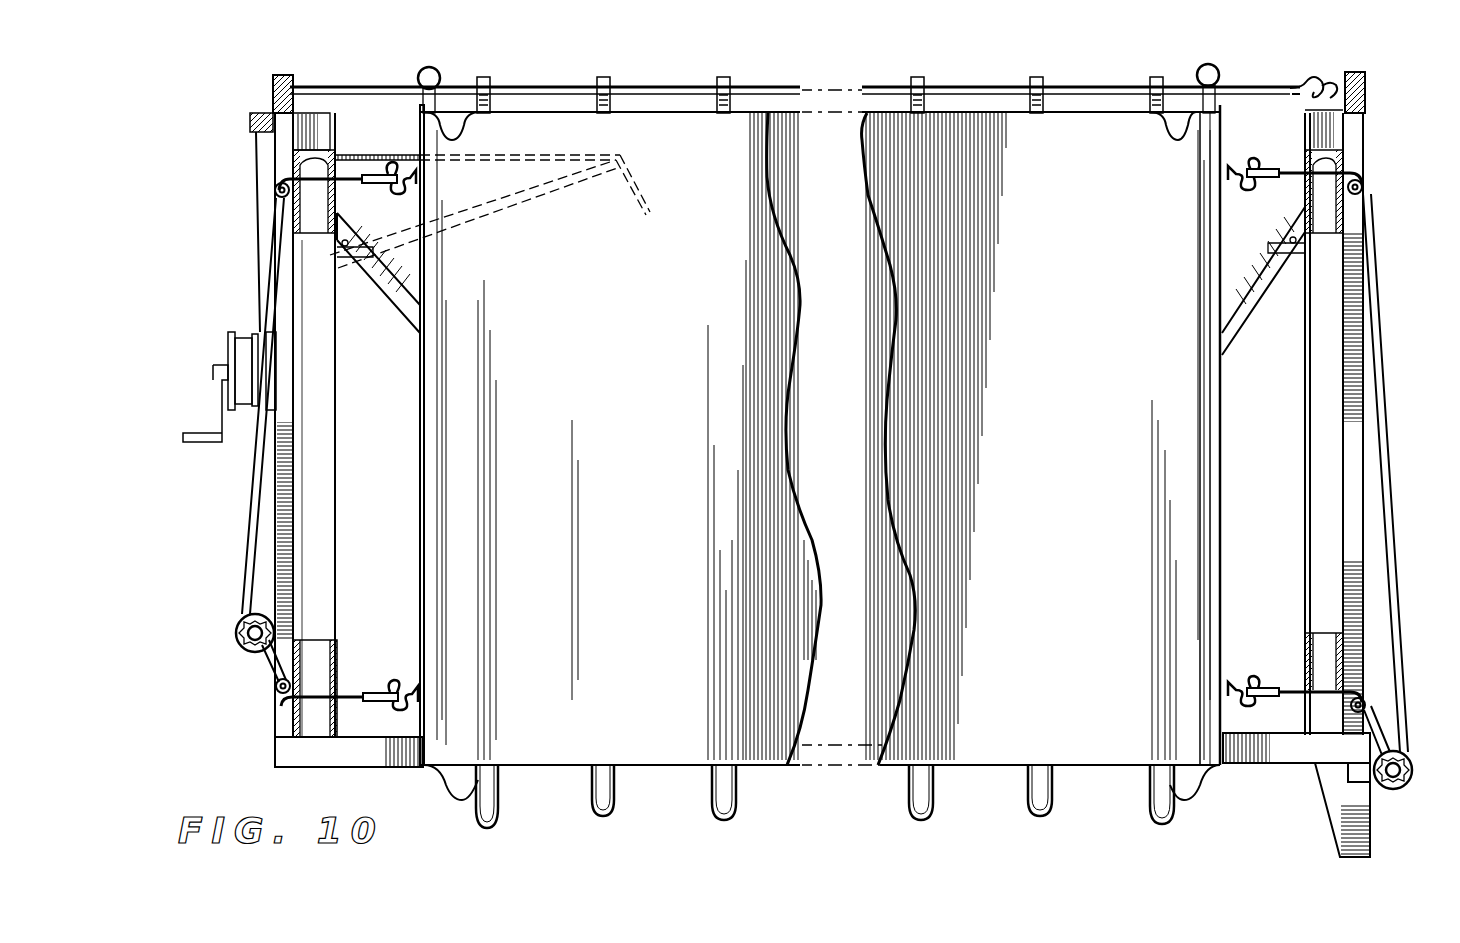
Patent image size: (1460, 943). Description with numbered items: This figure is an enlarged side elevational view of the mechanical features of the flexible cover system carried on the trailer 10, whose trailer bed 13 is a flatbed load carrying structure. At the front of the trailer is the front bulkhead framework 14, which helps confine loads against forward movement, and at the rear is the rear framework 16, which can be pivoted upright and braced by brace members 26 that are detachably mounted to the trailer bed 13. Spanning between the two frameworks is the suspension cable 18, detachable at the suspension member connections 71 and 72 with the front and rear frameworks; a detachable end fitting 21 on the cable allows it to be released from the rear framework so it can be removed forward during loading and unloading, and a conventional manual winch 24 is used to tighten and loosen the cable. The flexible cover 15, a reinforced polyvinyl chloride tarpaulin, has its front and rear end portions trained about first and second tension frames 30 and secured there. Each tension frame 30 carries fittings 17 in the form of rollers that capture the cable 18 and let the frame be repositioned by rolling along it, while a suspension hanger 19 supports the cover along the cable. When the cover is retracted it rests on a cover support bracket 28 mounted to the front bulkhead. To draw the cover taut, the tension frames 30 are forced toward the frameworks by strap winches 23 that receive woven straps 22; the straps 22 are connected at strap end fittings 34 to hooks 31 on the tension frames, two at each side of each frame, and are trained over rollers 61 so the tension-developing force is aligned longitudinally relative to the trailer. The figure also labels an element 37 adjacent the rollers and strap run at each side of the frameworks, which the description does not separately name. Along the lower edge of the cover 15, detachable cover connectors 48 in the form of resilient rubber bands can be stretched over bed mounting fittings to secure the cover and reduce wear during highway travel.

The trailer 10 is at (1205, 838).
The trailer bed 13 is at (1245, 722).
The front bulkhead framework 14 is at (310, 410).
The flexible cover 15 is at (608, 452).
The rear framework 16 is at (1320, 508).
The fittings 17 is at (422, 70).
The cable 18 is at (518, 88).
The suspension hanger 19 is at (1040, 76).
The detachable end fitting 21 is at (1310, 80).
The straps 22 is at (248, 515).
The strap winches 23 is at (236, 632).
The manual winch 24 is at (228, 345).
The brace members 26 is at (405, 300).
The cover support bracket 28 is at (400, 155).
The tension frames 30 is at (420, 515).
The hooks 31 is at (402, 194).
The strap end fittings 34 is at (378, 184).
The tension rod 37 is at (290, 177).
The detachable cover connectors 48 is at (712, 802).
The rollers 61 is at (275, 196).
The suspension member connection 71 is at (250, 120).
The suspension member connection 72 is at (1370, 80).